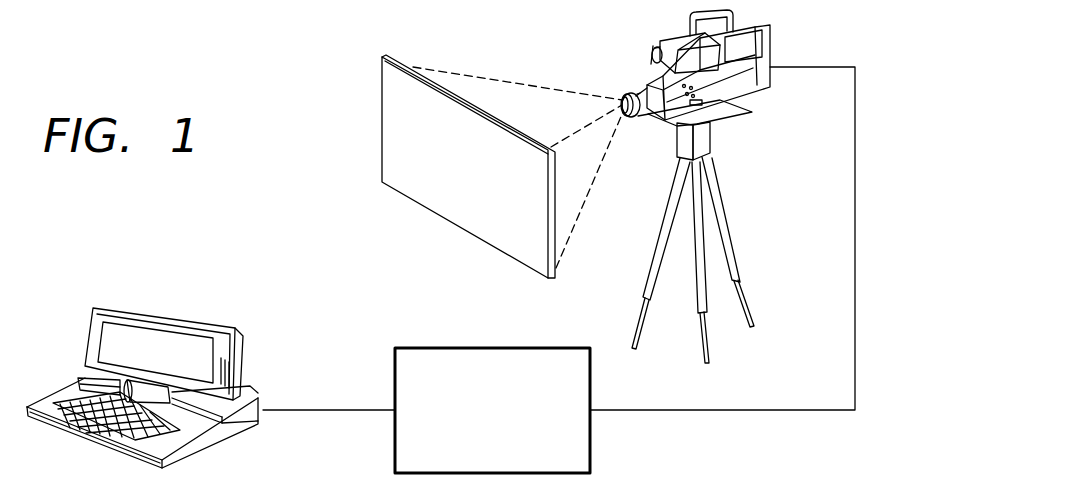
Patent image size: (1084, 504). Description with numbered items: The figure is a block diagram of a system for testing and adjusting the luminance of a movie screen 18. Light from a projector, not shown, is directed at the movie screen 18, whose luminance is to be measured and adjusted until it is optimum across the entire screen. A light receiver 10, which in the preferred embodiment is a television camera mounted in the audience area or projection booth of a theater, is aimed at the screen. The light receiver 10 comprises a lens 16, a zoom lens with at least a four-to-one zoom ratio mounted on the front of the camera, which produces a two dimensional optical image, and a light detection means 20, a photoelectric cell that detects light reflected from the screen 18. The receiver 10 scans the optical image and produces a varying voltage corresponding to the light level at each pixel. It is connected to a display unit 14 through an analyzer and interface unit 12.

The light receiver 10 is at (790, 46).
The analyzer and interface unit 12 is at (598, 440).
The display unit 14 is at (70, 320).
The lens 16 is at (640, 91).
The movie screen 18 is at (432, 77).
The light detection means 20 is at (662, 48).